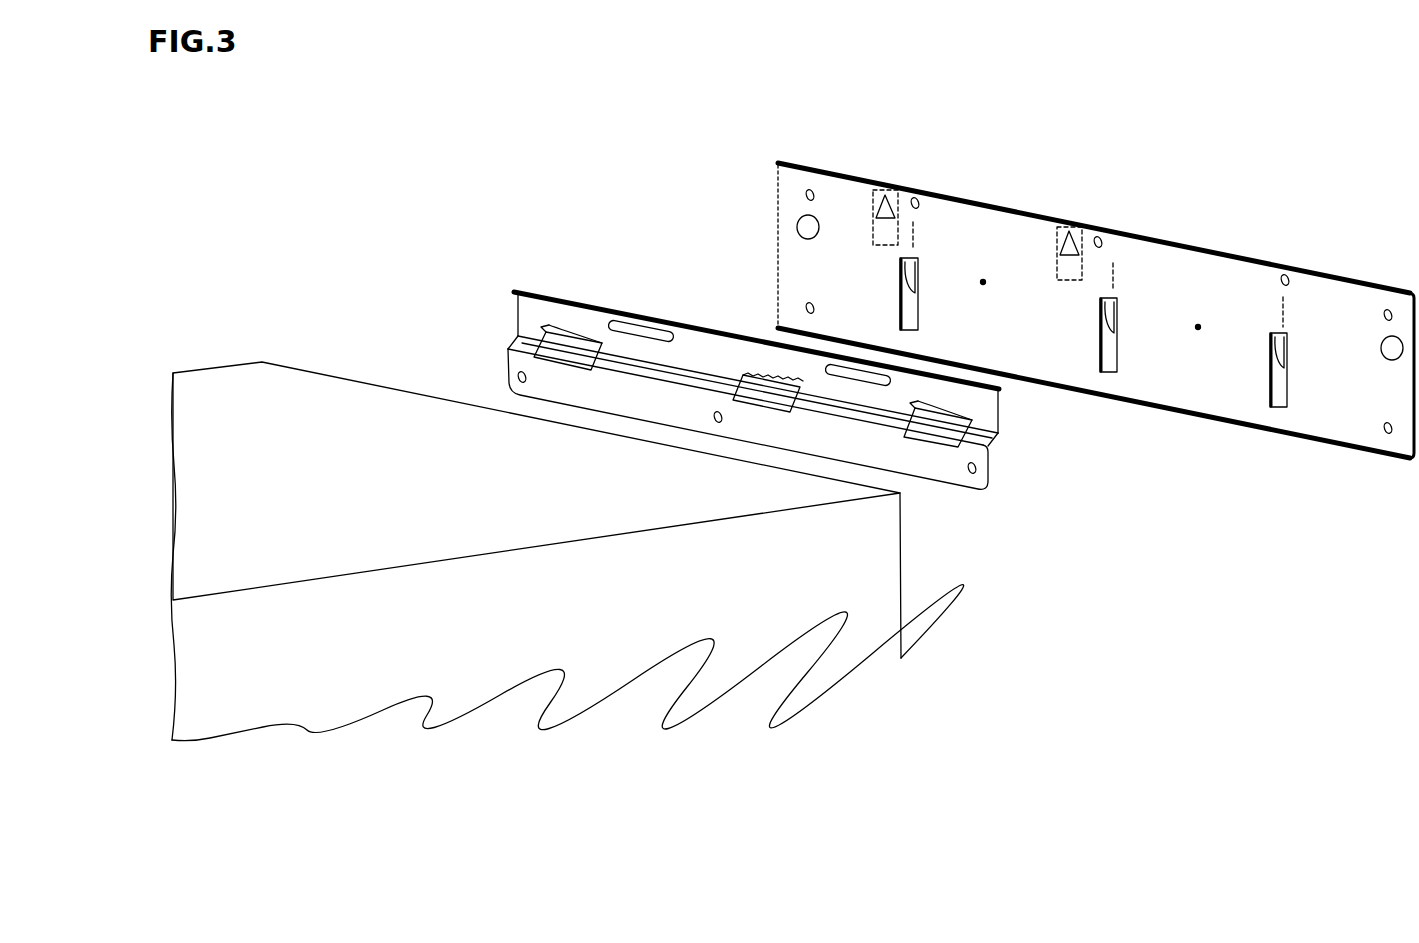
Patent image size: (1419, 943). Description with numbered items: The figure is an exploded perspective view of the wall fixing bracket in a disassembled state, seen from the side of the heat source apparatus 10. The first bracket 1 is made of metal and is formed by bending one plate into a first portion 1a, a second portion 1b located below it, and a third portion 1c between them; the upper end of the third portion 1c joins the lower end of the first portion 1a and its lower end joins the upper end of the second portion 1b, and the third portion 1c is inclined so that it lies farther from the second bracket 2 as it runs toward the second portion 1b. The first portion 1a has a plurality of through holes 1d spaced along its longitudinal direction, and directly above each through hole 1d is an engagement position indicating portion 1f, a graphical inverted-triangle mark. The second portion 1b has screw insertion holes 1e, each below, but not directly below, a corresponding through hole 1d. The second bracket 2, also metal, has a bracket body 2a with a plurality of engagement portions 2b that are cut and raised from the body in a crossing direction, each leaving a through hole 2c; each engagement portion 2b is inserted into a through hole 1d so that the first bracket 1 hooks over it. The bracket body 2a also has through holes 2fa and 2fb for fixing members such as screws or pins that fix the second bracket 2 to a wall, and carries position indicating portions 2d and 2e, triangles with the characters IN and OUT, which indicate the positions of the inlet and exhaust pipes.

The first bracket 1 is at (531, 282).
The first portion 1a is at (518, 312).
The second portion 1b is at (520, 367).
The third portion 1c is at (522, 343).
The through hole 1d is at (548, 332).
The screw insertion hole 1e is at (518, 379).
The engagement position indicating portion 1f is at (570, 327).
The second bracket 2 is at (792, 155).
The bracket body 2a is at (783, 217).
The engagement portion 2b is at (900, 286).
The through hole 2c is at (920, 272).
The position indicating portion 2d is at (872, 212).
The position indicating portion 2e is at (1056, 250).
The through hole 2fa is at (808, 304).
The through hole 2fb is at (806, 195).
The heat source apparatus 10 is at (229, 355).